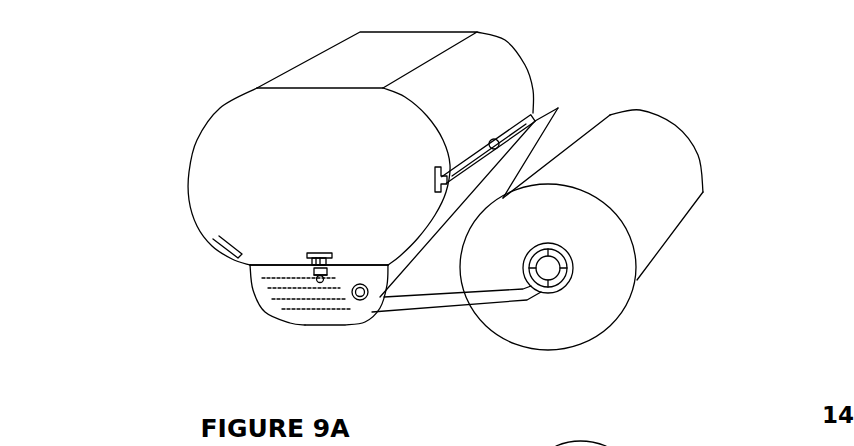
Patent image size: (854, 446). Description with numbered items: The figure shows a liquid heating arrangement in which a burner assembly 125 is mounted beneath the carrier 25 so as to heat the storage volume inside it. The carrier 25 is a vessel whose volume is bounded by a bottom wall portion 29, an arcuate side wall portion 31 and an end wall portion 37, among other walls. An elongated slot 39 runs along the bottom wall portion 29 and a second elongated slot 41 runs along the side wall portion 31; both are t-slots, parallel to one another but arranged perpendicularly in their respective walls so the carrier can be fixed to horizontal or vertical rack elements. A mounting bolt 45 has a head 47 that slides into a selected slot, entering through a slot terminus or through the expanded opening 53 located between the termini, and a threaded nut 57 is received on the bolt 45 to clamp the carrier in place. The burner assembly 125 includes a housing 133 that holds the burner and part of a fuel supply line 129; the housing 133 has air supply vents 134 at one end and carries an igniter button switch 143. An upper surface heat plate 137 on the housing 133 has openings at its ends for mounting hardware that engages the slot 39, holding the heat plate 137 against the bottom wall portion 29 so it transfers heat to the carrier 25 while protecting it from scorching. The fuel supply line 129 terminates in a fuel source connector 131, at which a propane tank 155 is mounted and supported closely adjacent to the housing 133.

The carrier 25 is at (310, 70).
The arcuate side wall portion 31 is at (490, 58).
The end wall portion 37 is at (215, 150).
The elongated slot 39 is at (337, 262).
The elongated slot 41 is at (533, 113).
The head 47 is at (305, 252).
The expanded opening 53 is at (535, 130).
The upper surface heat plate 137 is at (220, 246).
The bottom wall portion 29 is at (268, 262).
The air supply vents 134 is at (314, 273).
The threaded nut 57 is at (318, 281).
The mounting bolt 45 is at (313, 277).
The housing 133 is at (310, 323).
The igniter button switch 143 is at (360, 300).
The burner assembly 125 is at (442, 337).
The fuel supply line 129 is at (480, 297).
The fuel source connector 131 is at (567, 280).
The propane tank 155 is at (650, 205).